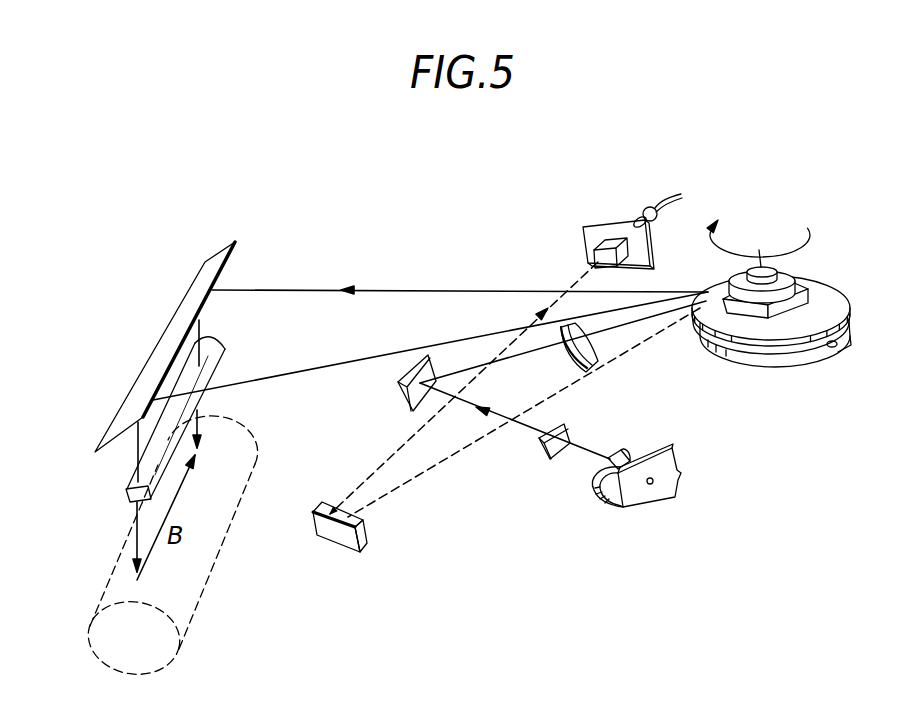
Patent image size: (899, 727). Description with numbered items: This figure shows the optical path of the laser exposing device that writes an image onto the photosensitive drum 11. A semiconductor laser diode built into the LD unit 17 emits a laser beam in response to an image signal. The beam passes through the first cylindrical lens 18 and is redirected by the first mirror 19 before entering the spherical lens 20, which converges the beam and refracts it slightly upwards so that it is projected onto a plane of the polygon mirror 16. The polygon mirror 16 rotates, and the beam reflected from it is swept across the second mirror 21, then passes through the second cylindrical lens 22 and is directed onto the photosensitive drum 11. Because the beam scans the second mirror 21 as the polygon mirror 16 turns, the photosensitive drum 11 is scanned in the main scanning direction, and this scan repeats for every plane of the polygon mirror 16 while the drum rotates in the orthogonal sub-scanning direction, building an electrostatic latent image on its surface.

The photosensitive drum 11 is at (208, 560).
The polygon mirror 16 is at (820, 290).
The laser diode unit 17 is at (643, 490).
The first cylindrical lens 18 is at (568, 436).
The first mirror 19 is at (428, 355).
The spherical lens 20 is at (572, 323).
The second mirror 21 is at (171, 318).
The second cylindrical lens 22 is at (126, 490).